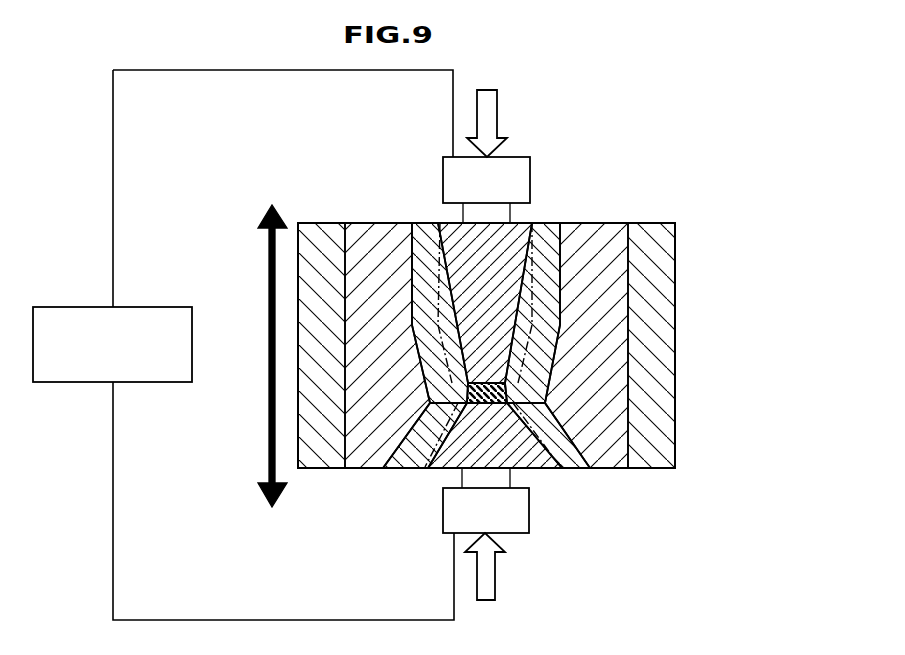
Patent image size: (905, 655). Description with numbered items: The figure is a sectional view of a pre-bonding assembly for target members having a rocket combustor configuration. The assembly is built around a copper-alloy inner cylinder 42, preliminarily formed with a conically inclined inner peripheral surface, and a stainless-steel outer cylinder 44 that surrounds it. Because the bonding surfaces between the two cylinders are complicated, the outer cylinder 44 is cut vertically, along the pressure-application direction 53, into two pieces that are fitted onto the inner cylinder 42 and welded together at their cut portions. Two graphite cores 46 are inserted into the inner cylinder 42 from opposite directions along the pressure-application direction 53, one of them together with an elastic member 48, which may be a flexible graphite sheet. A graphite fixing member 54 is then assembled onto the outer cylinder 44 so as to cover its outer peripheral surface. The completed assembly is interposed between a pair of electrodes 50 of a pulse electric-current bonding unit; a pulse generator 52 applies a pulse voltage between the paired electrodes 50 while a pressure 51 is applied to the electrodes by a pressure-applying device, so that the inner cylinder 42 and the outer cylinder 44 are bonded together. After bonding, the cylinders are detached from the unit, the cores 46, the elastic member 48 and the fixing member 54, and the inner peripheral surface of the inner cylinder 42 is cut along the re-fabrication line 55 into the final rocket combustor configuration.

The inner cylinder 42 is at (423, 468).
The outer cylinder 44 is at (382, 223).
The core 46 is at (503, 427).
The elastic member 48 is at (507, 395).
The electrode 50 is at (443, 175).
The pressure 51 is at (498, 120).
The pulse generator 52 is at (67, 307).
The pressure-application direction 53 is at (272, 260).
The fixing member 54 is at (677, 350).
The re-fabrication line 55 is at (533, 287).